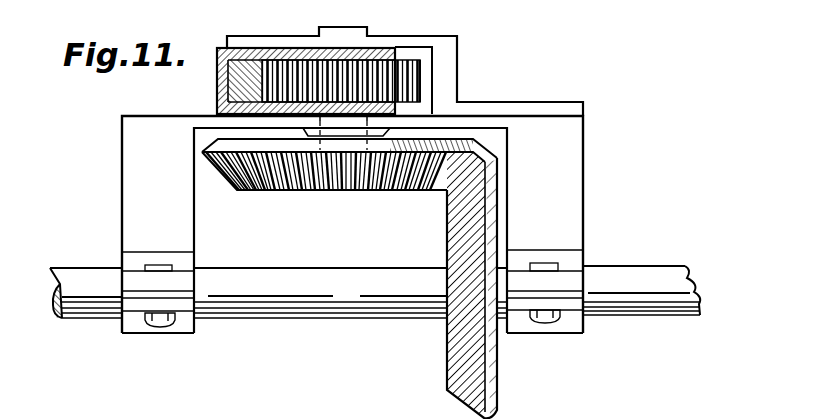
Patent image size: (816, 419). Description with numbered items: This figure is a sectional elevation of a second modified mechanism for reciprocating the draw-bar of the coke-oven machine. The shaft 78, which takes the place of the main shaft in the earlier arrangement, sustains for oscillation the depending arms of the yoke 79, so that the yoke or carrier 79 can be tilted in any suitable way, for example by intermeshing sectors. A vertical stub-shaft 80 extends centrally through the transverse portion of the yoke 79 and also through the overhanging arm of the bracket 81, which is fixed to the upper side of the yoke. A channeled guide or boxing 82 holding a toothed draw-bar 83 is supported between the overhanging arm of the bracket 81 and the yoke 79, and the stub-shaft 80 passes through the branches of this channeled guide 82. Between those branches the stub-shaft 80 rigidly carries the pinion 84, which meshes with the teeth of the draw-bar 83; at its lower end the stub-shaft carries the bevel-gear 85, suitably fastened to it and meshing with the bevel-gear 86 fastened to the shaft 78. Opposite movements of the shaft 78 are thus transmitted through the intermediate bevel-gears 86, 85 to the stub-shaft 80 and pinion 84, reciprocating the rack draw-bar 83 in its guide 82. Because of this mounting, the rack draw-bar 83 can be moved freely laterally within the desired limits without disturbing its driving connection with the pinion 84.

The shaft 78 is at (375, 278).
The yoke 79 is at (352, 224).
The vertical stub-shaft 80 is at (326, 30).
The bracket 81 is at (449, 76).
The channeled guide or boxing 82 is at (217, 47).
The toothed draw-bar 83 is at (238, 83).
The pinion 84 is at (397, 57).
The bevel-gear 85 is at (327, 191).
The bevel-gear 86 is at (447, 240).